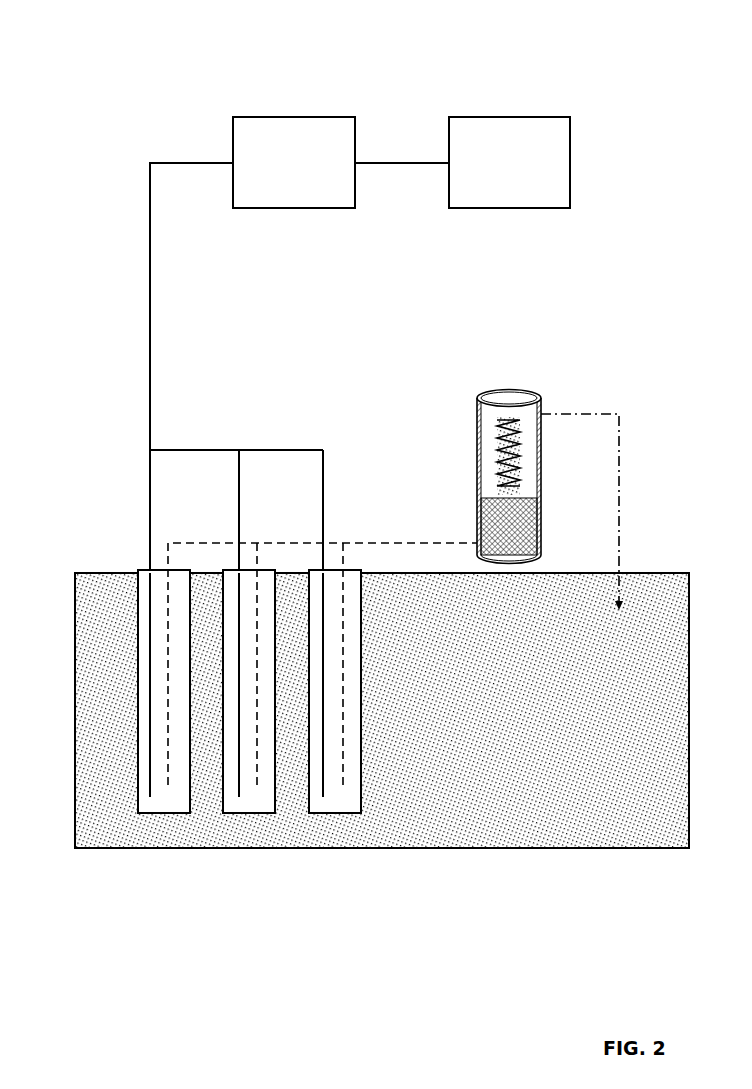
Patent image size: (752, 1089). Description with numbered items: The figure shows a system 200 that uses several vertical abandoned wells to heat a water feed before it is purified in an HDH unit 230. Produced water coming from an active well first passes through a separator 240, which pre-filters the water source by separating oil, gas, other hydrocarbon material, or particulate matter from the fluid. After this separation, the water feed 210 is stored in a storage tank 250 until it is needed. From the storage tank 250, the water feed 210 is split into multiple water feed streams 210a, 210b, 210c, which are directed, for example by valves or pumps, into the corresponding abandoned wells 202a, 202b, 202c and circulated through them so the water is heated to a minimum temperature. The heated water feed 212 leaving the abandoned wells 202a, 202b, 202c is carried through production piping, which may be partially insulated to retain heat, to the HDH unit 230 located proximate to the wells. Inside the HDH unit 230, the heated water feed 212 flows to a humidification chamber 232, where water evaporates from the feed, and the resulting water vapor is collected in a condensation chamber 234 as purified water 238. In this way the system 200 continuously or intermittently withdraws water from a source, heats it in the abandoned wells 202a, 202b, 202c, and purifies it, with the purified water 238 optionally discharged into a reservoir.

The system 200 is at (138, 64).
The water feed 210 is at (299, 466).
The water feed stream 210a is at (122, 623).
The water feed stream 210b is at (212, 623).
The water feed stream 210c is at (295, 623).
The storage tank 250 is at (294, 162).
The separator 240 is at (509, 162).
The vertical abandoned well 202a is at (172, 818).
The vertical abandoned well 202b is at (262, 828).
The vertical abandoned well 202c is at (347, 828).
The heated water feed 212 is at (322, 651).
The HDH unit 230 is at (471, 441).
The humidification chamber 232 is at (497, 511).
The condensation chamber 234 is at (500, 435).
The purified water 238 is at (580, 497).